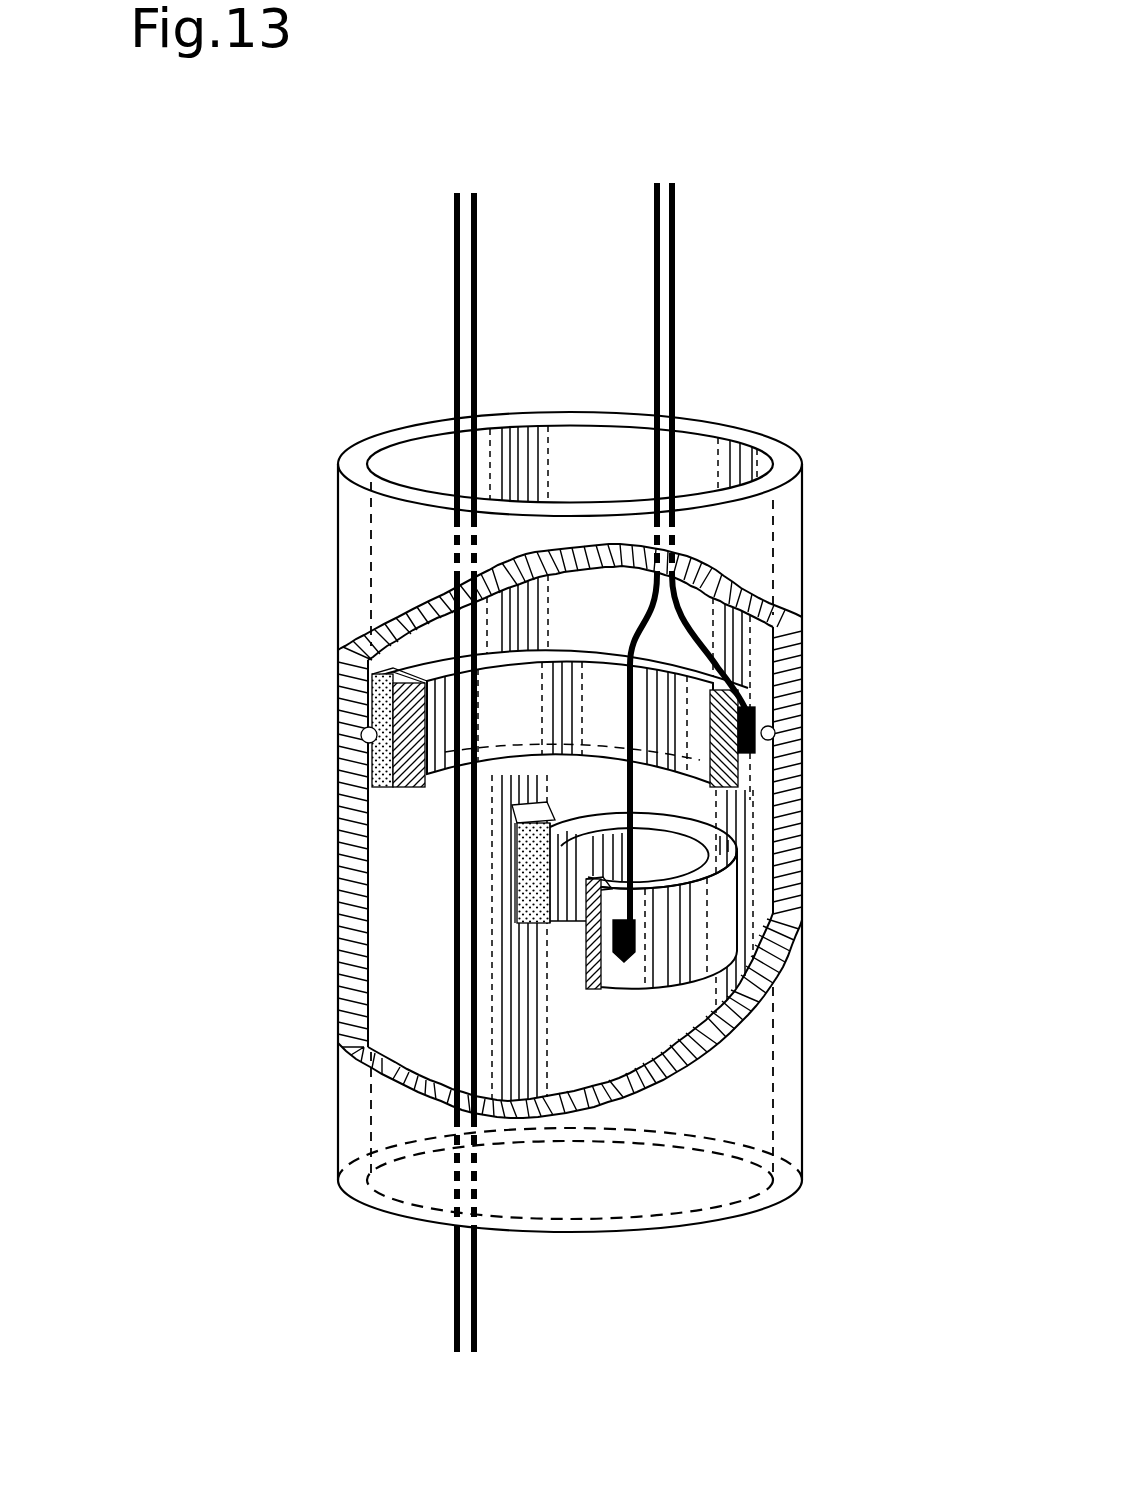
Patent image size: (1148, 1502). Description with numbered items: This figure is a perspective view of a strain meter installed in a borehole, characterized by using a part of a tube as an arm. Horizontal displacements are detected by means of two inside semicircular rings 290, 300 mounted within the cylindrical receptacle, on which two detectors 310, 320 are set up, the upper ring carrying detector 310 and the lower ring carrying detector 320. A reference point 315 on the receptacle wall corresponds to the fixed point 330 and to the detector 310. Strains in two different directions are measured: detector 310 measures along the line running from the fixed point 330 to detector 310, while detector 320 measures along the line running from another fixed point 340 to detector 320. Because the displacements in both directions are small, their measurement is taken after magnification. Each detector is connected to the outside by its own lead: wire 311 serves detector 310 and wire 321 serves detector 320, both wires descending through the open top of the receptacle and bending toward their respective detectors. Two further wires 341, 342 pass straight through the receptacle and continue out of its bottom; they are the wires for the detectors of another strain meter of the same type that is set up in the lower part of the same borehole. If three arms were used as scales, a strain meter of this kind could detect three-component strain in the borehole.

The inside semicircular ring 290 is at (557, 656).
The inside semicircular ring 300 is at (563, 818).
The detector 310 is at (758, 715).
The wire 311 is at (677, 307).
The reference point 315 is at (776, 729).
The detector 320 is at (614, 942).
The wire 321 is at (652, 270).
The fixed point 330 is at (362, 730).
The fixed point 340 is at (530, 860).
The wire 341 is at (480, 305).
The wire 342 is at (455, 273).